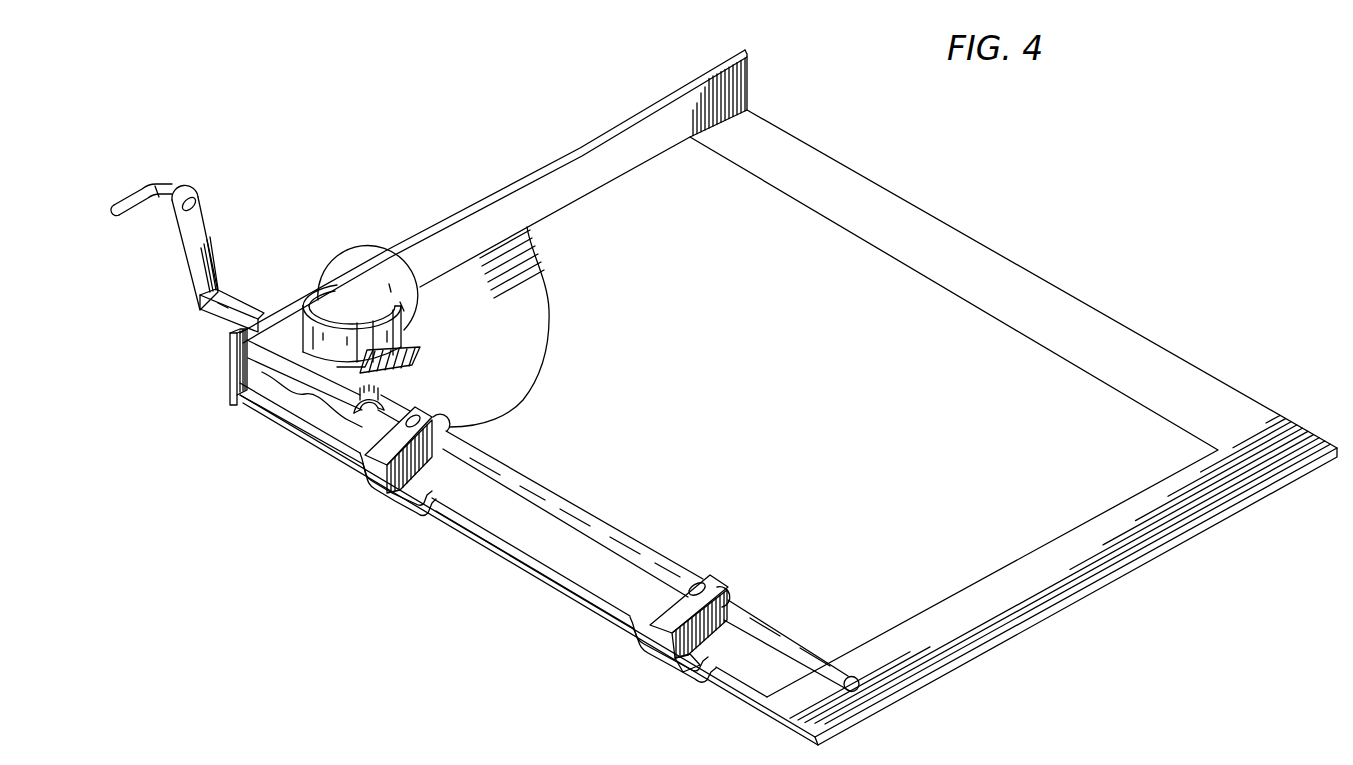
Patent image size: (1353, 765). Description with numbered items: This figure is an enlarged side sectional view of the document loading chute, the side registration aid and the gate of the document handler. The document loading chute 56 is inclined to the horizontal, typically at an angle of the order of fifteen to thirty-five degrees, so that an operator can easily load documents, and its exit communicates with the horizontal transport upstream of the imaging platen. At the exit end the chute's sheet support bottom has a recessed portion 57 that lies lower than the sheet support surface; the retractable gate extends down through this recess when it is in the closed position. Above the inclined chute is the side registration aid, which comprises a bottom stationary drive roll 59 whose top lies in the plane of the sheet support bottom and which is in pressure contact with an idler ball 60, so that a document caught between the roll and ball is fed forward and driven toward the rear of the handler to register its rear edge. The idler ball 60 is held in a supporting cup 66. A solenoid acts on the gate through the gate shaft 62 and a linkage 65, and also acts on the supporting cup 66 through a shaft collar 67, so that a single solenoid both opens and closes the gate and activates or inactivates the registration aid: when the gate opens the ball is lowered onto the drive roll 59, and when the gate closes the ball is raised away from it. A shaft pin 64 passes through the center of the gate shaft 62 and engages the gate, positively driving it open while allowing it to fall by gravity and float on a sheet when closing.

The document loading chute 56 is at (492, 273).
The recessed portion 57 is at (399, 505).
The bottom stationary drive roll 59 is at (394, 363).
The idler ball 60 is at (373, 263).
The gate shaft 62 is at (597, 530).
The shaft pin 64 is at (425, 419).
The linkage 65 is at (197, 241).
The supporting cup 66 is at (398, 305).
The shaft collar 67 is at (256, 359).